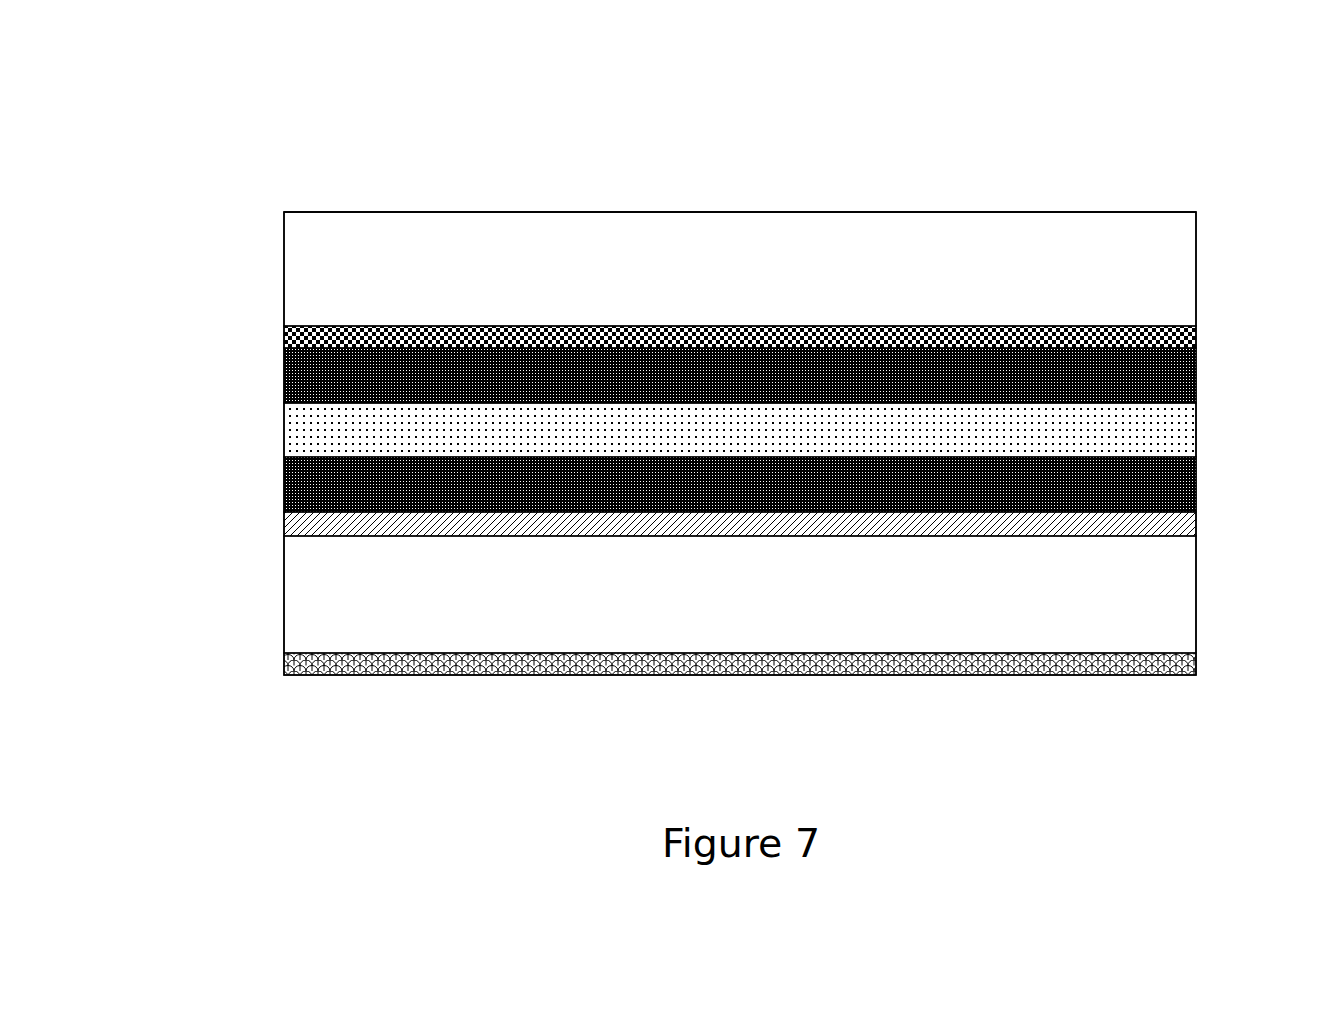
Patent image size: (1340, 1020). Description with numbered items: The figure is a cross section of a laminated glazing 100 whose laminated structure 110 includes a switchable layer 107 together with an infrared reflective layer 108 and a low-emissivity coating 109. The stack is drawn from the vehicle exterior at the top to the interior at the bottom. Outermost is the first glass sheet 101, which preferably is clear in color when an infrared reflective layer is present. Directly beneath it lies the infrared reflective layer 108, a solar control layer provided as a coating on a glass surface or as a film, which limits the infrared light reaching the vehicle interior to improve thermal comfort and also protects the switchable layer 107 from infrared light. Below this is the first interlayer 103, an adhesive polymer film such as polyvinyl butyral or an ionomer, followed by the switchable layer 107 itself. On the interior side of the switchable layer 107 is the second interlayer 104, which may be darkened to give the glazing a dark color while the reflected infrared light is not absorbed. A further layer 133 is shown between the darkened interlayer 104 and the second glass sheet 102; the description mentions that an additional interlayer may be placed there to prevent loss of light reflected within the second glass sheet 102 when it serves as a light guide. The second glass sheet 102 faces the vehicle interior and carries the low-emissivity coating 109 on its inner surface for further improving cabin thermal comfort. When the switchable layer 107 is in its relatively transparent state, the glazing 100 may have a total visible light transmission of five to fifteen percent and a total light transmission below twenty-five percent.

The glazing 100 is at (463, 152).
The laminated structure 110 is at (1198, 211).
The first glass sheet 101 is at (1170, 258).
The infrared reflective layer 108 is at (303, 334).
The first interlayer 103 is at (1172, 378).
The switchable layer 107 is at (305, 430).
The second interlayer 104 is at (1172, 483).
The adhesive layer 133 is at (287, 522).
The second glass sheet 102 is at (1168, 595).
The low-emissivity coating 109 is at (282, 660).